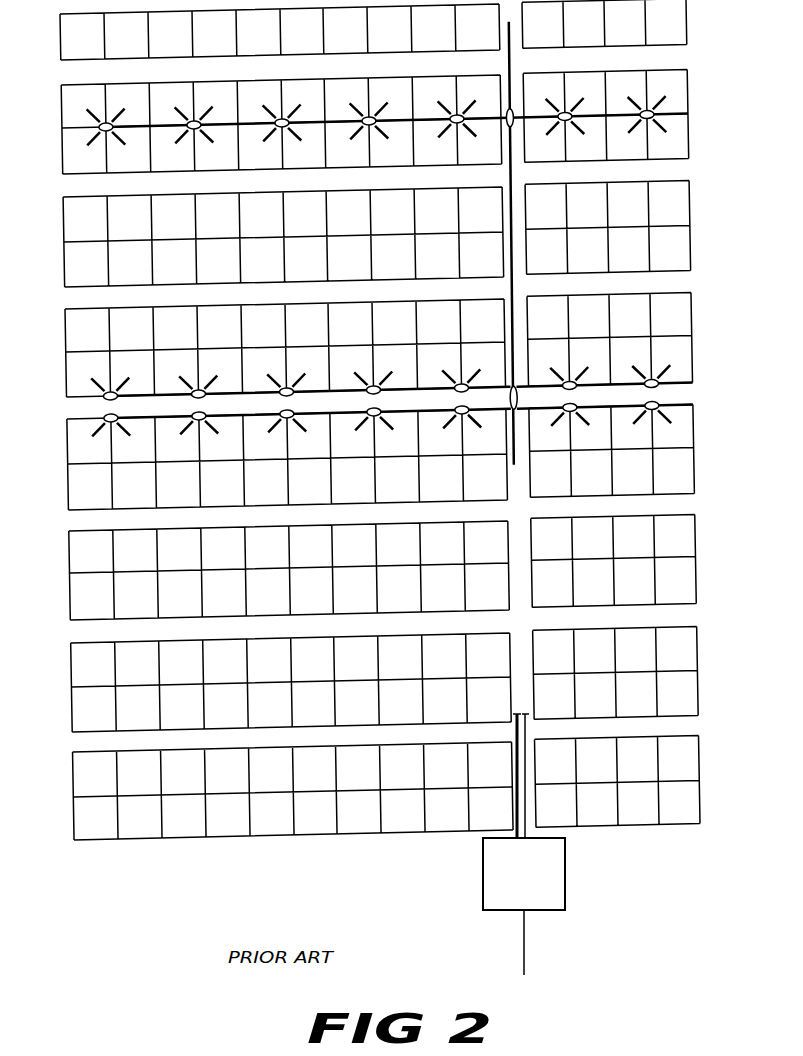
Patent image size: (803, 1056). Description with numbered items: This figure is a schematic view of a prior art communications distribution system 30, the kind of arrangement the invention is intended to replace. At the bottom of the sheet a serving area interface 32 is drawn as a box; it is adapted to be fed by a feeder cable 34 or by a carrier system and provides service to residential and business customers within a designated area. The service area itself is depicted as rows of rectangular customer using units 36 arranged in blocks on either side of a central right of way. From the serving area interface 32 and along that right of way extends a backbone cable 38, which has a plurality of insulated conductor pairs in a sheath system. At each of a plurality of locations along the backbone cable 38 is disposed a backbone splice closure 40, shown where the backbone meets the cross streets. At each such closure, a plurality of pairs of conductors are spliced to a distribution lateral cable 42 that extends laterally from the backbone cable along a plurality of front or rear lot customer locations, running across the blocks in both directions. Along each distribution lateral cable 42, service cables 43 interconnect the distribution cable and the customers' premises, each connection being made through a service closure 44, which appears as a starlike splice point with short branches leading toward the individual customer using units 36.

The prior art communications distribution system 30 is at (96, 863).
The serving area interface 32 is at (565, 872).
The feeder cable 34 is at (525, 958).
The customer using unit 36 is at (87, 762).
The backbone cable 38 is at (527, 775).
The backbone splice closure 40 is at (519, 393).
The distribution lateral cable 42 is at (397, 411).
The service cable 43 is at (98, 428).
The service closure 44 is at (102, 399).